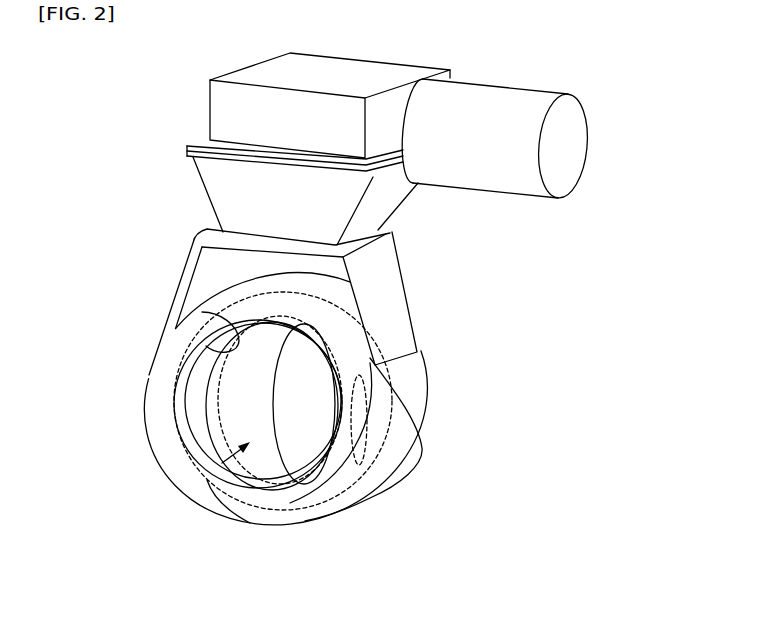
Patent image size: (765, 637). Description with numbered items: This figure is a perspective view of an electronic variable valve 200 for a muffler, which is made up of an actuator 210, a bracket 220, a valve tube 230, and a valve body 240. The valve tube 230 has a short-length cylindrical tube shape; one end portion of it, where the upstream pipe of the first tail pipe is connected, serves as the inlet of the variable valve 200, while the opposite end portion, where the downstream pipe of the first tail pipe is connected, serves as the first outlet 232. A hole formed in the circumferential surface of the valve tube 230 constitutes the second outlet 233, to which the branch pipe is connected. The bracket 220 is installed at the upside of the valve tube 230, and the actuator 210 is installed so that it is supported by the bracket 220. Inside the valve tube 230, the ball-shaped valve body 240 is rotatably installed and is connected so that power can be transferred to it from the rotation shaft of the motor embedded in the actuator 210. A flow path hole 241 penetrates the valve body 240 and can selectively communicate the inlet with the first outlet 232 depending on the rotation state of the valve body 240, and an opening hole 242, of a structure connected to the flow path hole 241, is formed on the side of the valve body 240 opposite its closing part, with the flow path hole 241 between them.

The electronic variable valve 200 is at (599, 320).
The actuator 210 is at (194, 192).
The bracket 220 is at (405, 288).
The valve tube 230 is at (430, 387).
The first outlet 232 is at (207, 435).
The second outlet 233 is at (205, 436).
The valve body 240 is at (186, 436).
The flow path hole 241 is at (202, 312).
The opening hole 242 is at (358, 390).